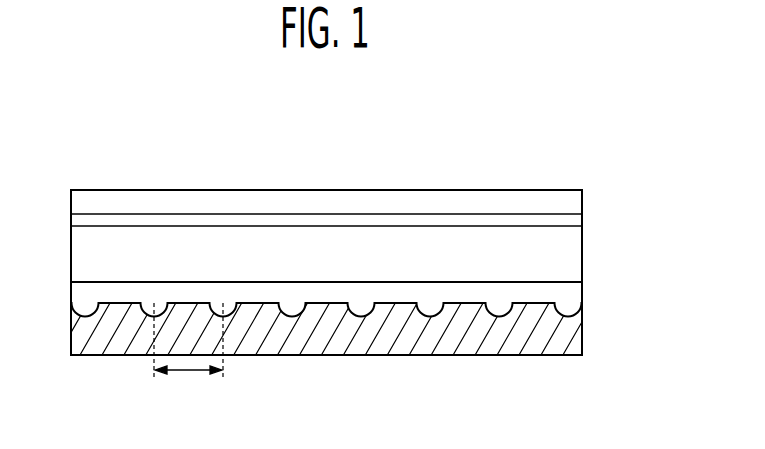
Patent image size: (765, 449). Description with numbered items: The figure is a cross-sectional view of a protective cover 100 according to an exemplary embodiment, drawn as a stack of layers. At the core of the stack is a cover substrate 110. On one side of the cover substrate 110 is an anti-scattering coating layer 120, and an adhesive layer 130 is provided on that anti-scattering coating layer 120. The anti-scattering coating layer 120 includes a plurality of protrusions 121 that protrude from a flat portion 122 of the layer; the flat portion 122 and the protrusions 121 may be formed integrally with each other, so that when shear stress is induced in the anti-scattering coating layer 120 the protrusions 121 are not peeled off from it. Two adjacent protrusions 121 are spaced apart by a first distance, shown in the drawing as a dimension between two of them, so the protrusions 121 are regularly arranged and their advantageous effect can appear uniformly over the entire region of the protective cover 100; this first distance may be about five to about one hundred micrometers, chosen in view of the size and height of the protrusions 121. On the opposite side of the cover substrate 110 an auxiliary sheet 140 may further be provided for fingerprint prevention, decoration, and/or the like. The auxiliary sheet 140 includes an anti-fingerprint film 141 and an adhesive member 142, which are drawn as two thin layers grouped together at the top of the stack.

The protective cover 100 is at (603, 116).
The cover substrate 110 is at (566, 258).
The anti-scattering coating layer 120 is at (566, 292).
The protrusions 121 is at (425, 317).
The flat portion 122 is at (400, 305).
The adhesive layer 130 is at (566, 345).
The auxiliary sheet 140 is at (655, 182).
The anti-fingerprint film 141 is at (584, 200).
The adhesive member 142 is at (566, 217).